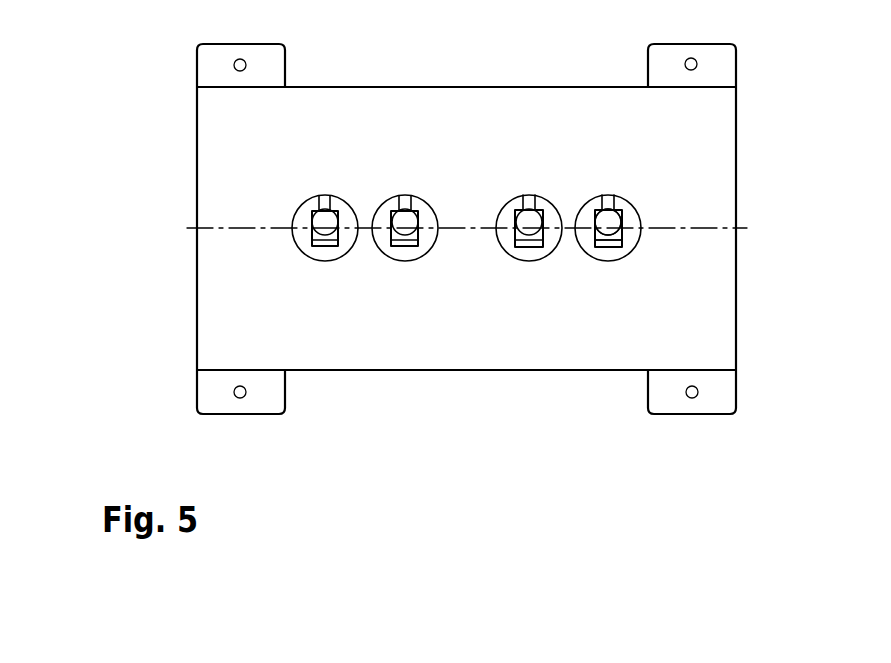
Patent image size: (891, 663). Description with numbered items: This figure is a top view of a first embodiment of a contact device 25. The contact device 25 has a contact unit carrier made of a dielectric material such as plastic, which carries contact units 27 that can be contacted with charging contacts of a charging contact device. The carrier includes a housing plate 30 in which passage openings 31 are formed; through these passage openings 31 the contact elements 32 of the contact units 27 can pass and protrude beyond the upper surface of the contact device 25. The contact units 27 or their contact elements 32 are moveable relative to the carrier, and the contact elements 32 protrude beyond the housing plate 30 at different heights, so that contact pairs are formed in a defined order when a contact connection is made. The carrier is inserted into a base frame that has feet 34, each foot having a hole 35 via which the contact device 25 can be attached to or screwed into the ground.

The contact device 25 is at (188, 210).
The contact units 27 is at (325, 260).
The housing plate 30 is at (700, 287).
The passage openings 31 is at (609, 252).
The contact elements 32 is at (609, 222).
The feet 34 is at (718, 390).
The hole 35 is at (692, 398).